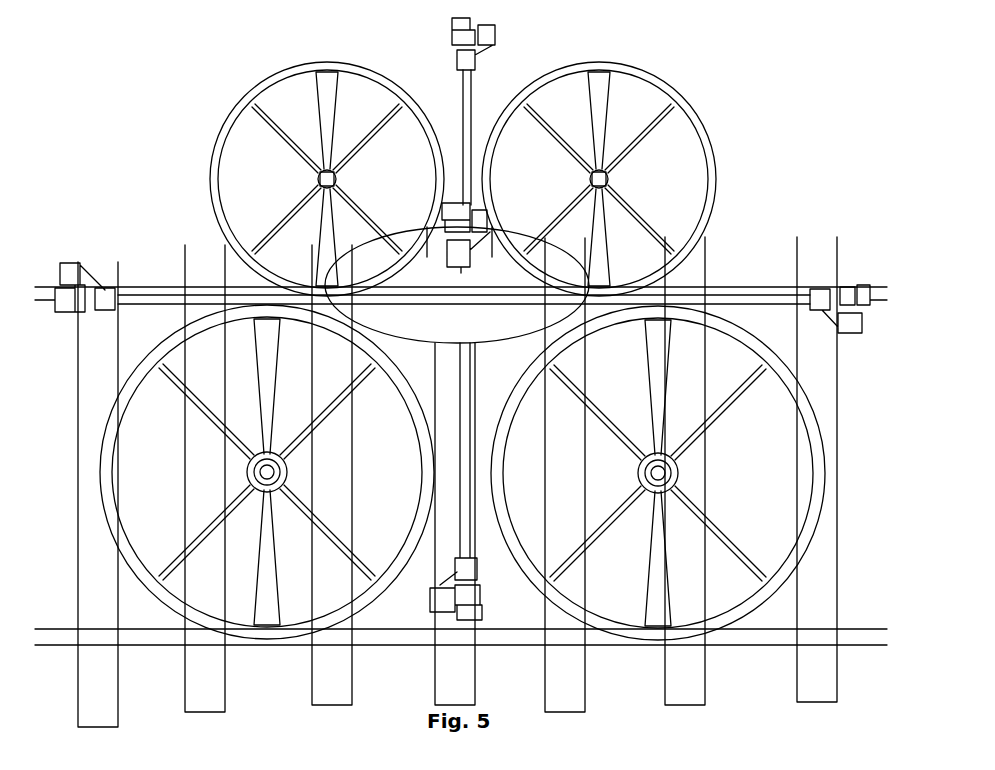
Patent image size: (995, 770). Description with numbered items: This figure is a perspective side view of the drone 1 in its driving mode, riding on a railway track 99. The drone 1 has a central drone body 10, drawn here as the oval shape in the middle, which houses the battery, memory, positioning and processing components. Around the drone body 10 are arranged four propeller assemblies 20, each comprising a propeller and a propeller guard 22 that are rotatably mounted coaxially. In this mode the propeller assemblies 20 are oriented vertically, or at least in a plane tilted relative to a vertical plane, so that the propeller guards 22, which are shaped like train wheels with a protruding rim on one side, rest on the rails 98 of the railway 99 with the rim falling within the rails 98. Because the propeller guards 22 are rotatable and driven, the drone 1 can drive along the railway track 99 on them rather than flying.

The drone 1 is at (140, 75).
The drone body 10 is at (475, 324).
The propeller assembly 20 is at (216, 163).
The propeller guard 22 is at (262, 84).
The rails 98 is at (773, 289).
The railway track 99 is at (811, 350).